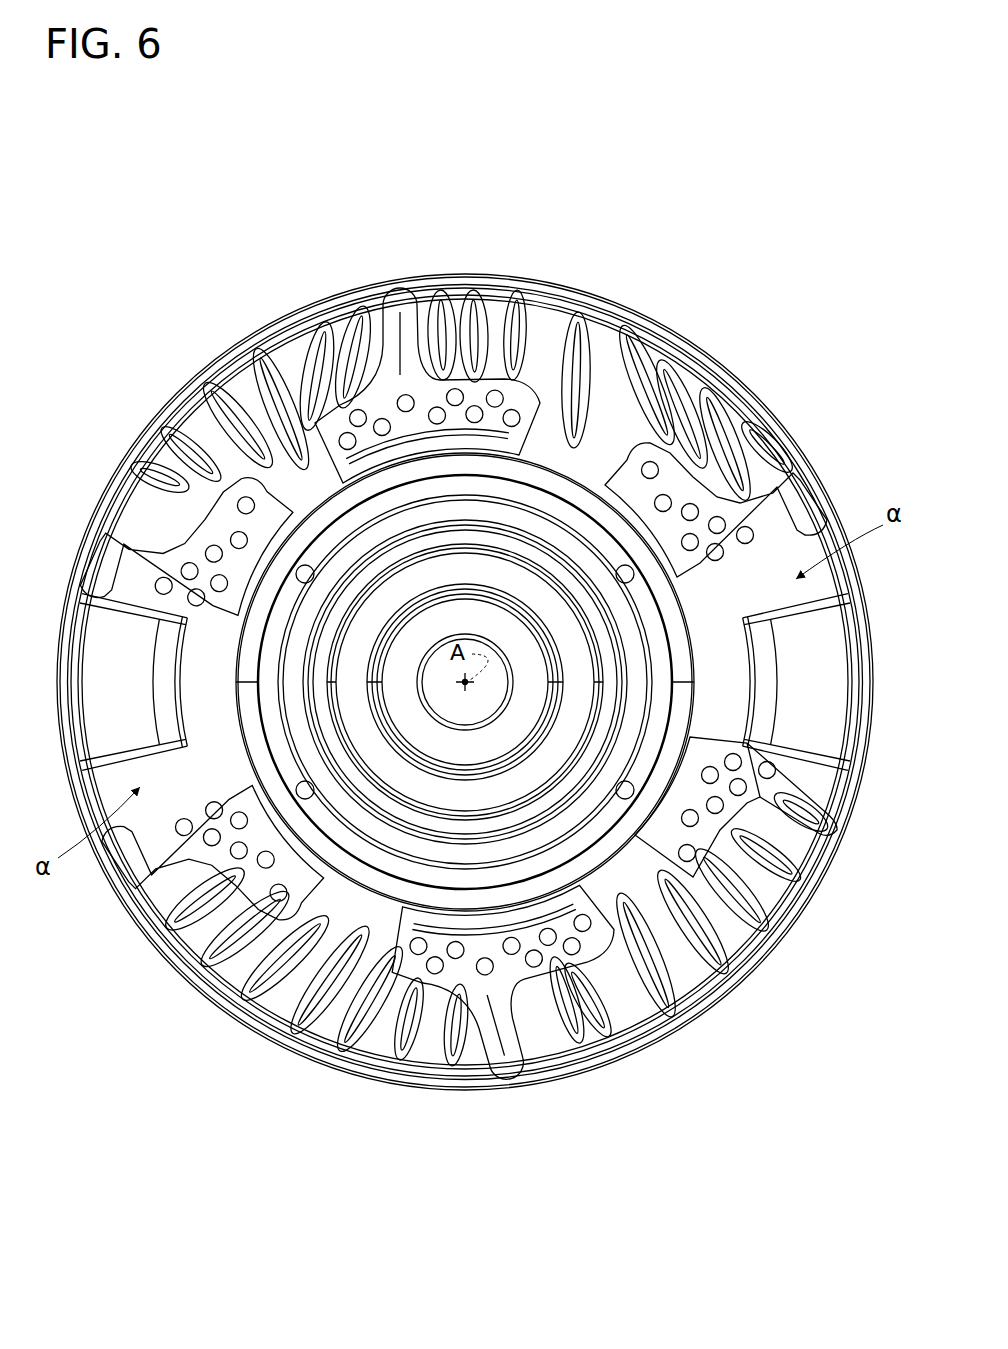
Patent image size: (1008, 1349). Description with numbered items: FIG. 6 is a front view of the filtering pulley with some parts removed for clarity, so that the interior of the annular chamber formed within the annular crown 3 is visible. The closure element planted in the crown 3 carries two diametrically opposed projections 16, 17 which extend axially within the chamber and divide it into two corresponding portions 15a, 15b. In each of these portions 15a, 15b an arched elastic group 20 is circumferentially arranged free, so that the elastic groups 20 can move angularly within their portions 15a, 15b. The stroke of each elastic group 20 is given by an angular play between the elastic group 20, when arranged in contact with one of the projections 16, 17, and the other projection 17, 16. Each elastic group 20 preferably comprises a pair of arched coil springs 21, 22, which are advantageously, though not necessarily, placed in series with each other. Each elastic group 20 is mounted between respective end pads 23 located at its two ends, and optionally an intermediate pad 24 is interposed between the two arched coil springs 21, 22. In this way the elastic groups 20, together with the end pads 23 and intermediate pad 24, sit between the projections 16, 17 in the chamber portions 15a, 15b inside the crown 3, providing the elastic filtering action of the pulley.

The annular crown 3 is at (832, 490).
The portion of the chamber 15a is at (435, 1035).
The portion of the chamber 15b is at (581, 447).
The projection 16 is at (835, 713).
The projection 17 is at (100, 668).
The arched elastic group 20 is at (240, 331).
The arched coil spring 21 is at (704, 357).
The arched coil spring 22 is at (176, 392).
The end pad 23 is at (746, 518).
The intermediate pad 24 is at (406, 370).